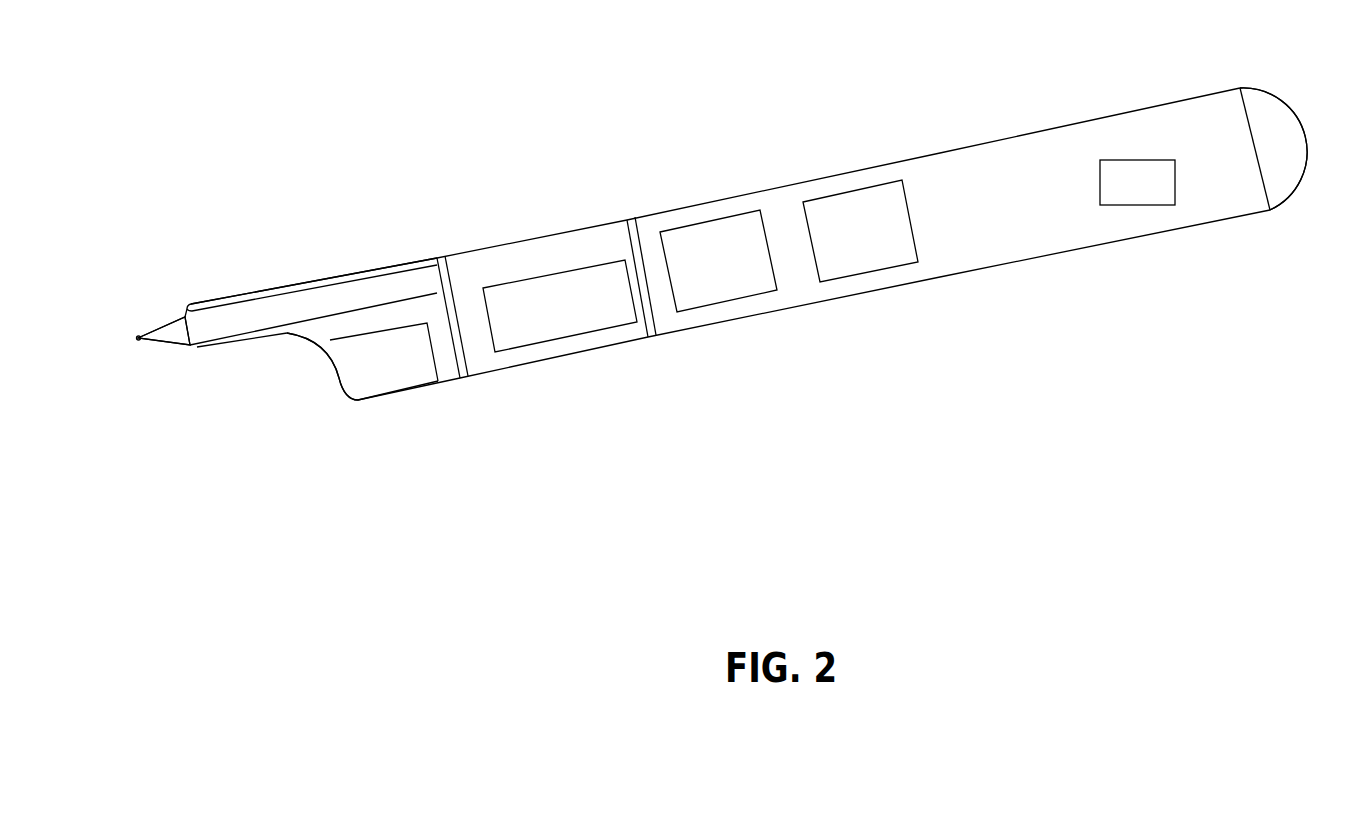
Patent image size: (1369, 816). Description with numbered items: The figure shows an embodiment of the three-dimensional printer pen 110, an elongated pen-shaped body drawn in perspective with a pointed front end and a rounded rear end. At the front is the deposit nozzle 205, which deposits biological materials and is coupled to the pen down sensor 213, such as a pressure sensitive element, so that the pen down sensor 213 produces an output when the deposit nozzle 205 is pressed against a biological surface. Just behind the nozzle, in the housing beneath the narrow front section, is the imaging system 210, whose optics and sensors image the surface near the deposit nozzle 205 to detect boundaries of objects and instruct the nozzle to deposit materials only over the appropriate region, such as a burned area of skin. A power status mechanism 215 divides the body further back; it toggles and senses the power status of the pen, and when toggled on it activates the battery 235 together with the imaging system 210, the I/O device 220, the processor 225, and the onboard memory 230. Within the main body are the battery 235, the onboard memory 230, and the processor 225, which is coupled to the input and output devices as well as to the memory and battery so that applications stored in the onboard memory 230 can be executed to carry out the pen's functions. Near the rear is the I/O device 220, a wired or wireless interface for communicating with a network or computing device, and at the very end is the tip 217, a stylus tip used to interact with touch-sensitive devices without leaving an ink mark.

The 3D printer pen 110 is at (993, 112).
The deposit nozzle 205 is at (138, 337).
The imaging system 210 is at (414, 375).
The pen down sensor 213 is at (467, 375).
The power status mechanism 215 is at (653, 335).
The tip 217 is at (1277, 160).
The I/O device 220 is at (1161, 195).
The processor 225 is at (884, 249).
The onboard memory 230 is at (744, 278).
The battery 235 is at (578, 320).